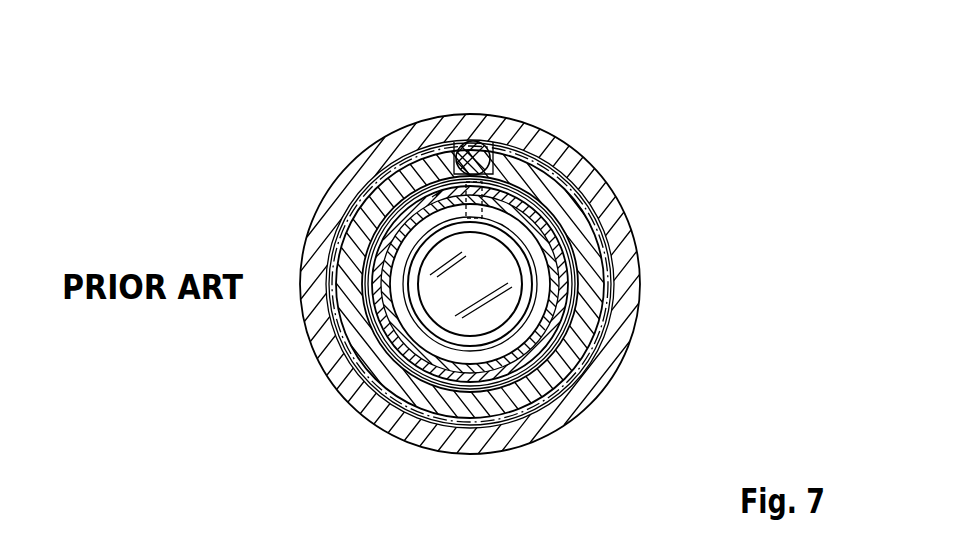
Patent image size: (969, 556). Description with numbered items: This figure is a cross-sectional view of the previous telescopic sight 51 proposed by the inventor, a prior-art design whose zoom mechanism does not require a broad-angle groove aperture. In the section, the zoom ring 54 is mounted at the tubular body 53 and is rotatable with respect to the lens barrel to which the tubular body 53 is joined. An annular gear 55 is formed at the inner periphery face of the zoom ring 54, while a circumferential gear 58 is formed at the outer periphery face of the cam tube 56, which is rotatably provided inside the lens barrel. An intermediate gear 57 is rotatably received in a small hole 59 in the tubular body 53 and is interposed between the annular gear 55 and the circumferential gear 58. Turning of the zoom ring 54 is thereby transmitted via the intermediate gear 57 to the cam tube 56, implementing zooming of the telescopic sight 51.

The telescopic sight 51 is at (656, 258).
The tubular body 53 is at (380, 183).
The zoom ring 54 is at (333, 378).
The annular gear 55 is at (588, 170).
The cam tube 56 is at (577, 312).
The intermediate gear 57 is at (497, 148).
The circumferential gear 58 is at (577, 206).
The small hole 59 is at (454, 152).